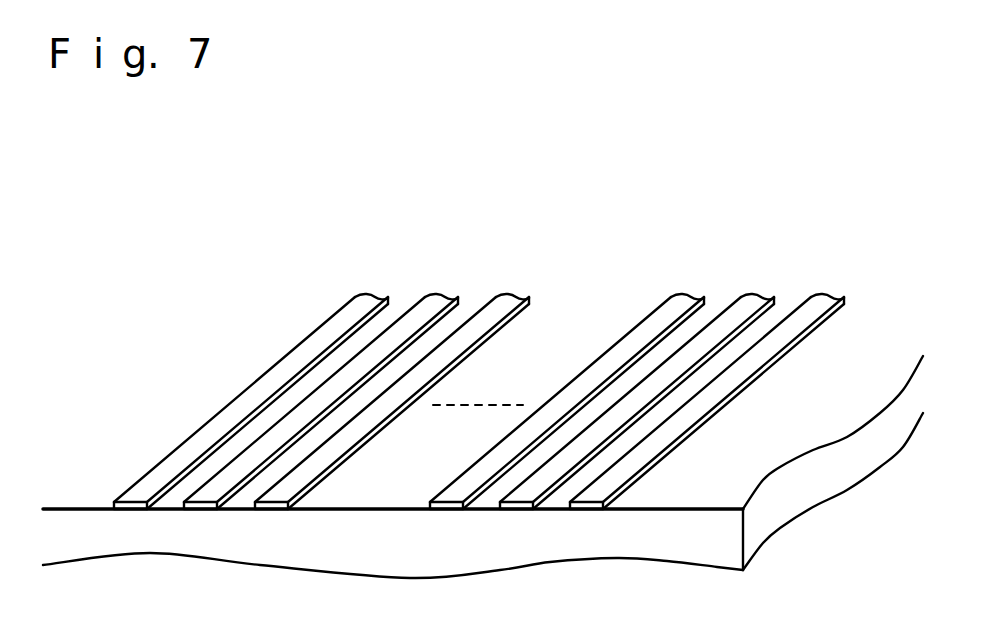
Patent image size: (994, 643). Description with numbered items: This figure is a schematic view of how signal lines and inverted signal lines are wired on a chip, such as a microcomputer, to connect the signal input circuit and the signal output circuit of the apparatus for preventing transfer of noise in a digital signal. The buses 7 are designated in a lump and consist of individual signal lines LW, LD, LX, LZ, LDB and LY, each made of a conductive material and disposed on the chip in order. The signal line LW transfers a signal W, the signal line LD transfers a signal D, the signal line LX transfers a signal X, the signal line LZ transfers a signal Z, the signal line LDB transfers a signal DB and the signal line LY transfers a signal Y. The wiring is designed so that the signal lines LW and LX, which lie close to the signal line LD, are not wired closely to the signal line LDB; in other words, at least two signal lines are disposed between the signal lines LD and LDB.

The buses 7 is at (856, 278).
The signal line LW is at (220, 418).
The signal line LD is at (328, 393).
The signal line LX is at (438, 362).
The signal line LZ is at (622, 352).
The signal line LDB is at (647, 392).
The signal line LY is at (667, 433).